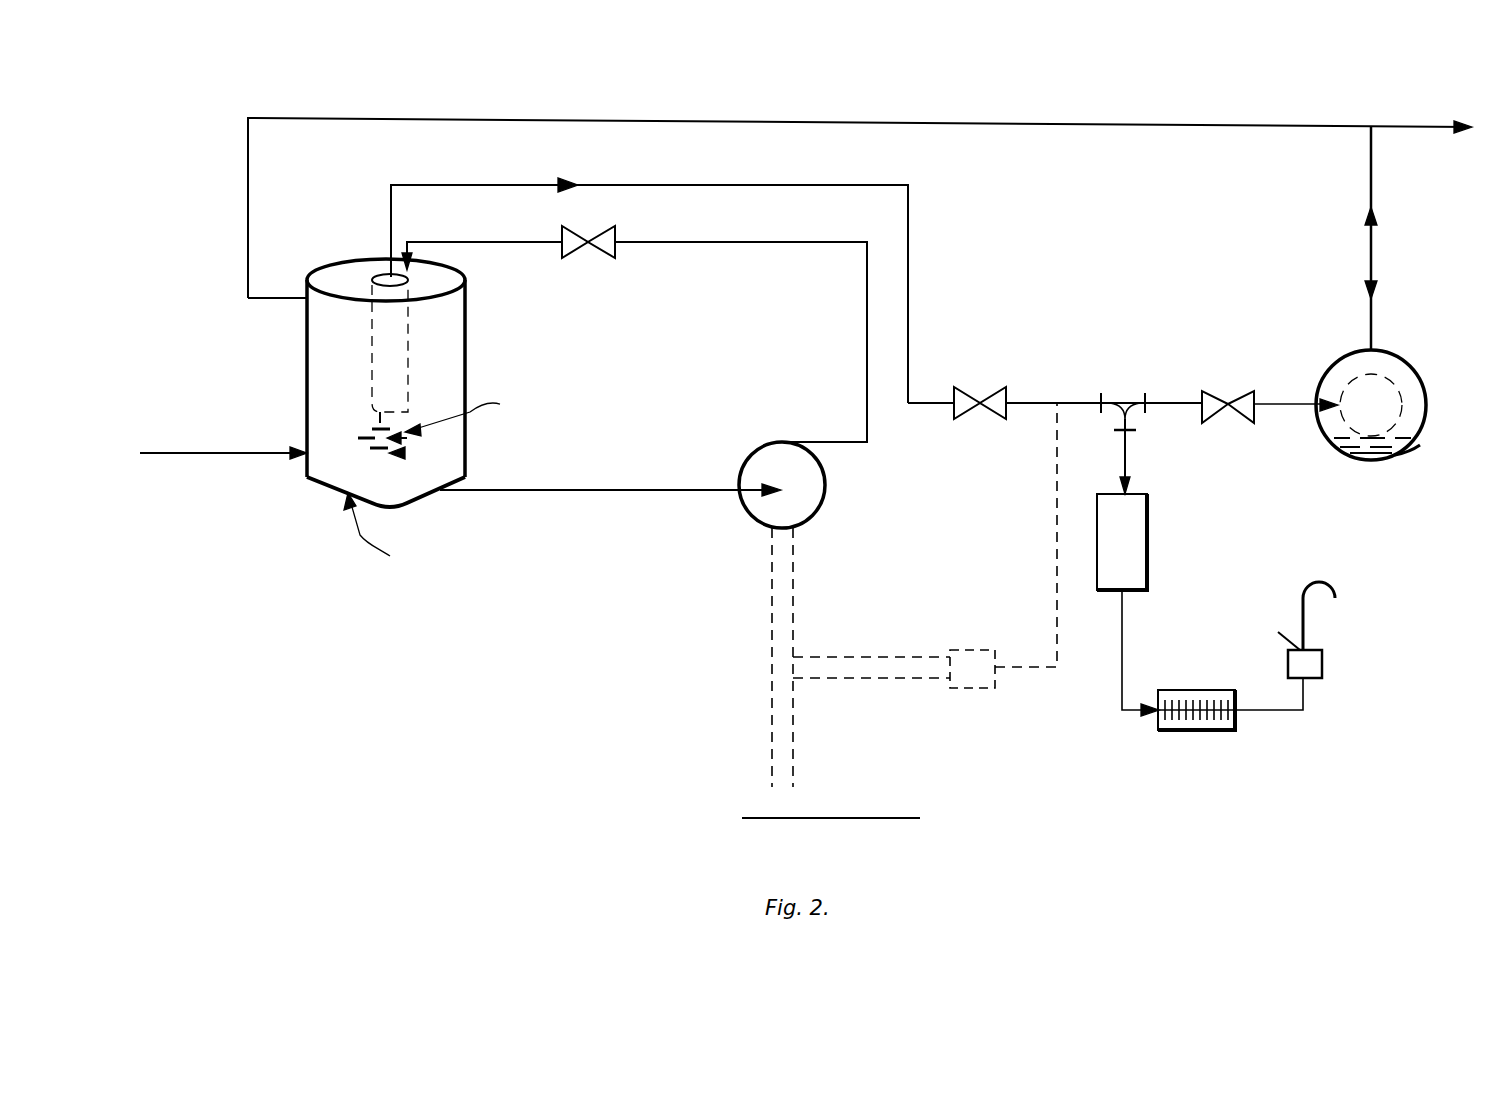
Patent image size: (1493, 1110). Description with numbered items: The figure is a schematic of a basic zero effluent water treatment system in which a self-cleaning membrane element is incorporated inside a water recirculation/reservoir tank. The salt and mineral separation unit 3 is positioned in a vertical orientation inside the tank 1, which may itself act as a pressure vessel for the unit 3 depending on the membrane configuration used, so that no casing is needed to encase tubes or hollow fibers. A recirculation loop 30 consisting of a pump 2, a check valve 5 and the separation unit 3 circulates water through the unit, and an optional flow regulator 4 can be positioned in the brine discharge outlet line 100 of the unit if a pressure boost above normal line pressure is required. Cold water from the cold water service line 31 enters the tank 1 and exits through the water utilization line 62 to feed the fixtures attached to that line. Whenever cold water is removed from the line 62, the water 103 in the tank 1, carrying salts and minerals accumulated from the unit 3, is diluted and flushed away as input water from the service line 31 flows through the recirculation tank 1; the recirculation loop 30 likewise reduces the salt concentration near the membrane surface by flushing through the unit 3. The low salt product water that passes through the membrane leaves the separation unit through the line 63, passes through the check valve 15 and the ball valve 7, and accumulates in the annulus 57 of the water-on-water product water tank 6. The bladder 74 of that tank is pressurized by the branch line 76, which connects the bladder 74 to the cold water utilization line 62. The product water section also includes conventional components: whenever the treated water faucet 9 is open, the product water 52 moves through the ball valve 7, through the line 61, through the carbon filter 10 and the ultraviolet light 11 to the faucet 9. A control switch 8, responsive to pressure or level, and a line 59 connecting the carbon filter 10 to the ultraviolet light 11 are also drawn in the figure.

The tank 1 is at (315, 492).
The pump 2 is at (819, 523).
The salt and mineral separation unit 3 is at (366, 354).
The flow regulator 4 is at (402, 453).
The check valve 5 is at (615, 240).
The product water tank 6 is at (1422, 452).
The ball valve 7 is at (1221, 388).
The control switch 8 is at (972, 640).
The treated water faucet 9 is at (1280, 660).
The carbon filter 10 is at (1152, 582).
The ultraviolet light 11 is at (1195, 684).
The check valve 15 is at (985, 386).
The recirculation loop 30 is at (703, 498).
The cold water service line 31 is at (247, 452).
The product water 52 is at (1410, 437).
The annulus 57 is at (1348, 362).
The filter outlet line 59 is at (1122, 632).
The line 61 is at (1125, 455).
The water utilization line 62 is at (553, 118).
The line 63 is at (760, 185).
The bladder 74 is at (1388, 378).
The branch line 76 is at (1371, 190).
The brine discharge outlet line 100 is at (380, 417).
The water 103 is at (407, 491).